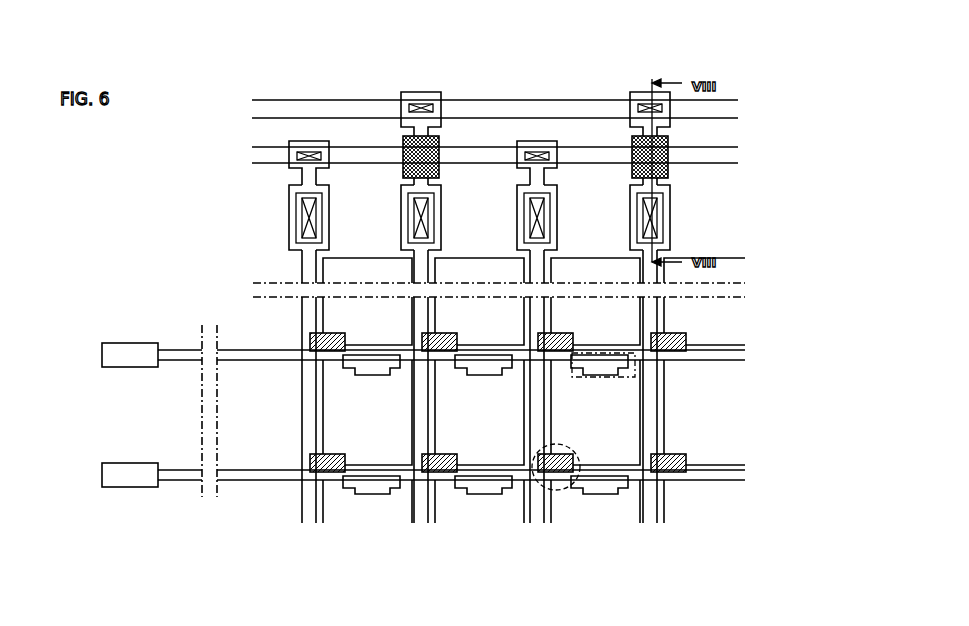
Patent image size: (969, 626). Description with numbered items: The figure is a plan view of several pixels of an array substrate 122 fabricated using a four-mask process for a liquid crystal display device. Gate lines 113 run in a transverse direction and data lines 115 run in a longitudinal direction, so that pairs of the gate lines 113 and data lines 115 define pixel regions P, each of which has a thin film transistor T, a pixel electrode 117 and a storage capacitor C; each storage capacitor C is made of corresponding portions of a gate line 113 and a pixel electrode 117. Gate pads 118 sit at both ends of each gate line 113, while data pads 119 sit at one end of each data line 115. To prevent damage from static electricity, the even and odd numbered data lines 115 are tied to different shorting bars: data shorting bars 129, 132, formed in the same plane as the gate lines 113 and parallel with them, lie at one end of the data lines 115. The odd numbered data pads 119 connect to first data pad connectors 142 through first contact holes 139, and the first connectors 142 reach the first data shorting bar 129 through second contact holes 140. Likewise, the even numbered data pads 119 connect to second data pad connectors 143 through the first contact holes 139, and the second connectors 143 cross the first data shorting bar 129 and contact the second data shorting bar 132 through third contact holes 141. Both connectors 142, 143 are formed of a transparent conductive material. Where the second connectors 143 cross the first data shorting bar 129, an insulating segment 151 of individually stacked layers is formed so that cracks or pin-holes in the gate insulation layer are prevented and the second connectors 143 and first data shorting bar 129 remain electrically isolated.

The gate line 113 is at (735, 474).
The data line 115 is at (660, 505).
The pixel electrode 117 is at (660, 418).
The gate pad 118 is at (124, 352).
The data pad 119 is at (435, 232).
The array substrate 122 is at (218, 254).
The first data shorting bar 129 is at (737, 158).
The second data shorting bar 132 is at (738, 110).
The data pad contact hole 139 is at (545, 212).
The first shorting bar contact hole 140 is at (305, 155).
The second shorting bar contact hole 141 is at (424, 108).
The first data pad connector 142 is at (330, 200).
The second data pad connector 143 is at (442, 200).
The insulating segment 151 is at (445, 140).
The storage capacitor C is at (660, 372).
The pixel region P is at (630, 400).
The thin film transistor T is at (535, 490).